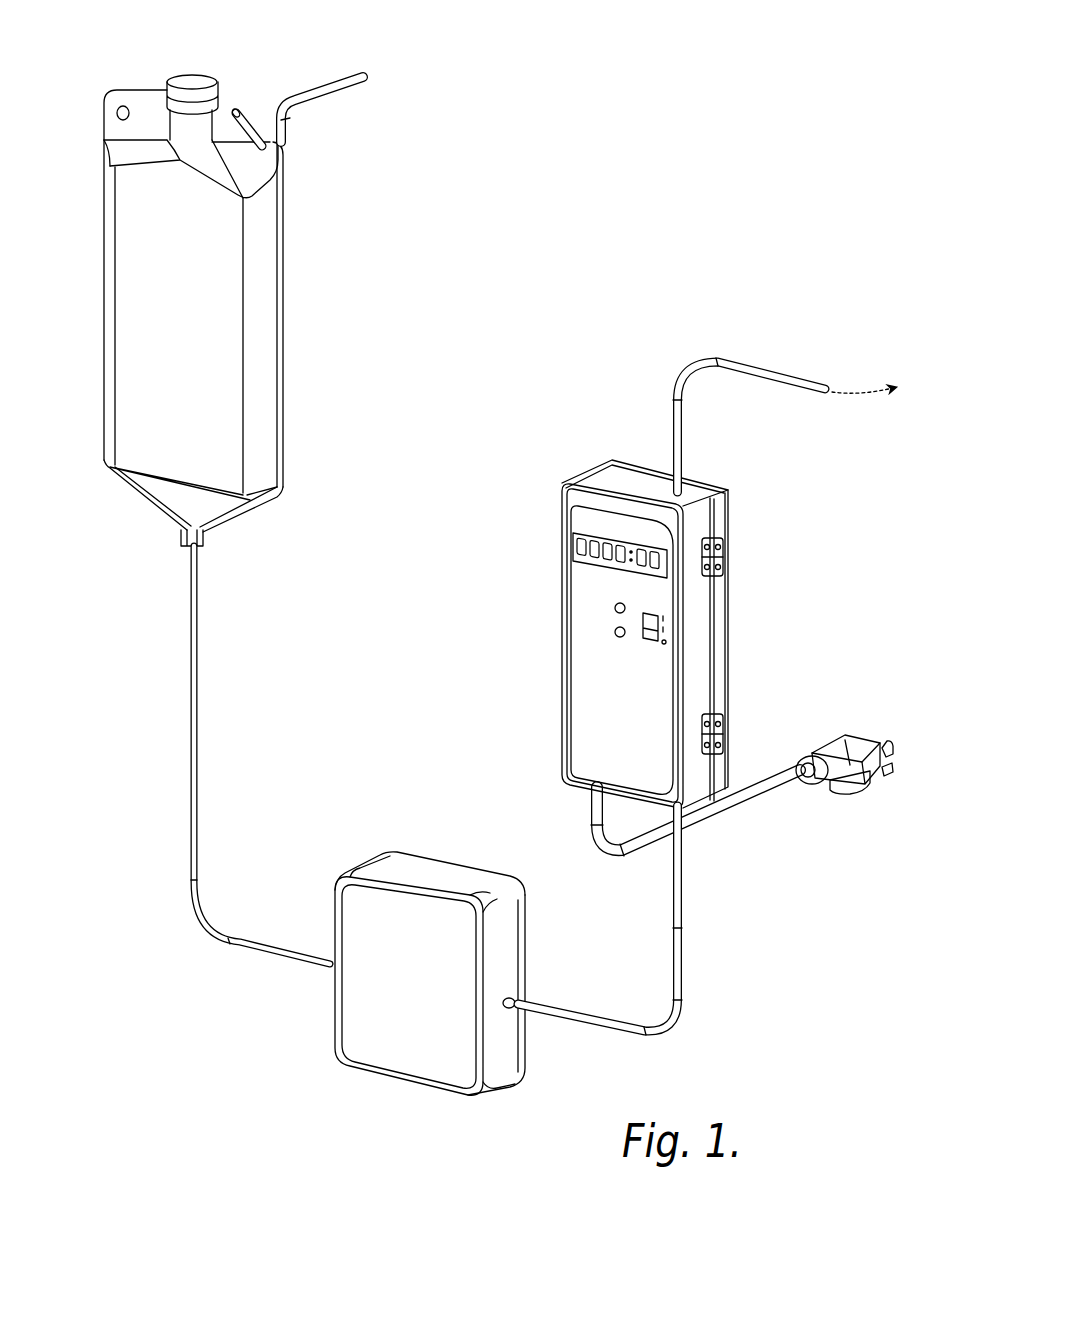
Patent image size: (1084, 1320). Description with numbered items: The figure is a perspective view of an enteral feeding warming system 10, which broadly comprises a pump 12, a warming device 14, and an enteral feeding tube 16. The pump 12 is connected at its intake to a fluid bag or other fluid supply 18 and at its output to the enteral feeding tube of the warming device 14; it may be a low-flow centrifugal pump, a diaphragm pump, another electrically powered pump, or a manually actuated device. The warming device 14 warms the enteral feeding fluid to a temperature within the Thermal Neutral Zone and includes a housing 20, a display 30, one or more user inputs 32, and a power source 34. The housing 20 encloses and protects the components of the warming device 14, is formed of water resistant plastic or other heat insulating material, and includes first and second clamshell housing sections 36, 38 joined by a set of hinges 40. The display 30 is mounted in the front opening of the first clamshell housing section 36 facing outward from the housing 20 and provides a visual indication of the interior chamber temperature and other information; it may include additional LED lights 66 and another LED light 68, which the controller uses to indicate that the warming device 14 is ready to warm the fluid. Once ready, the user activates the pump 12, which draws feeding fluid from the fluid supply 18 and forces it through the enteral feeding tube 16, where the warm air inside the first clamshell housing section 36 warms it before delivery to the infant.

The enteral feeding warming system 10 is at (550, 157).
The pump 12 is at (370, 840).
The warming device 14 is at (679, 600).
The enteral feeding tube 16 is at (683, 437).
The fluid supply 18 is at (318, 294).
The housing 20 is at (685, 634).
The display 30 is at (590, 568).
The user inputs 32 is at (640, 651).
The power source 34 is at (843, 812).
The first clamshell housing section 36 is at (583, 478).
The second clamshell housing section 38 is at (745, 500).
The hinges 40 is at (724, 560).
The LED light 66 is at (613, 607).
The LED light 68 is at (613, 633).